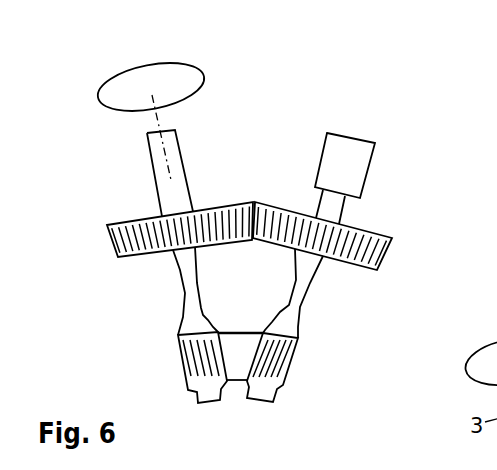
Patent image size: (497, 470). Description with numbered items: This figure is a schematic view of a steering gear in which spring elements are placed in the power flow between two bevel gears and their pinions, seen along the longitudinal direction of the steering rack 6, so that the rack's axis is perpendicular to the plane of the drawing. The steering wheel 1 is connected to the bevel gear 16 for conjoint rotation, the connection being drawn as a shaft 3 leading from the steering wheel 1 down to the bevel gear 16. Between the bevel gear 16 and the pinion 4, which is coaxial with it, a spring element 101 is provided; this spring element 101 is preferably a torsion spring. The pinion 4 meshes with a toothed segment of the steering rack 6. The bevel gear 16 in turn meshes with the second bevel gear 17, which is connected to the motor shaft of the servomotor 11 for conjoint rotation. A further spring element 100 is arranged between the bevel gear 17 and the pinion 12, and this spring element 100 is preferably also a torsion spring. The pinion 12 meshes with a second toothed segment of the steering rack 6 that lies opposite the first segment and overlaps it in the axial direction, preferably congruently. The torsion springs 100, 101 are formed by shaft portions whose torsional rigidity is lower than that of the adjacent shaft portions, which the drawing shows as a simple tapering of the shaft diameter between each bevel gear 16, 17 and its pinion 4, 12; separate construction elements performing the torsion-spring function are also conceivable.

The steering wheel 1 is at (185, 85).
The supporting rod 3 is at (178, 185).
The servomotor 11 is at (348, 157).
The bevel gear 16 is at (133, 235).
The second bevel gear 17 is at (377, 242).
The spring element 101 is at (187, 290).
The spring element 100 is at (298, 301).
The pinion 4 is at (190, 365).
The pinion 12 is at (283, 362).
The steering rack 6 is at (240, 350).